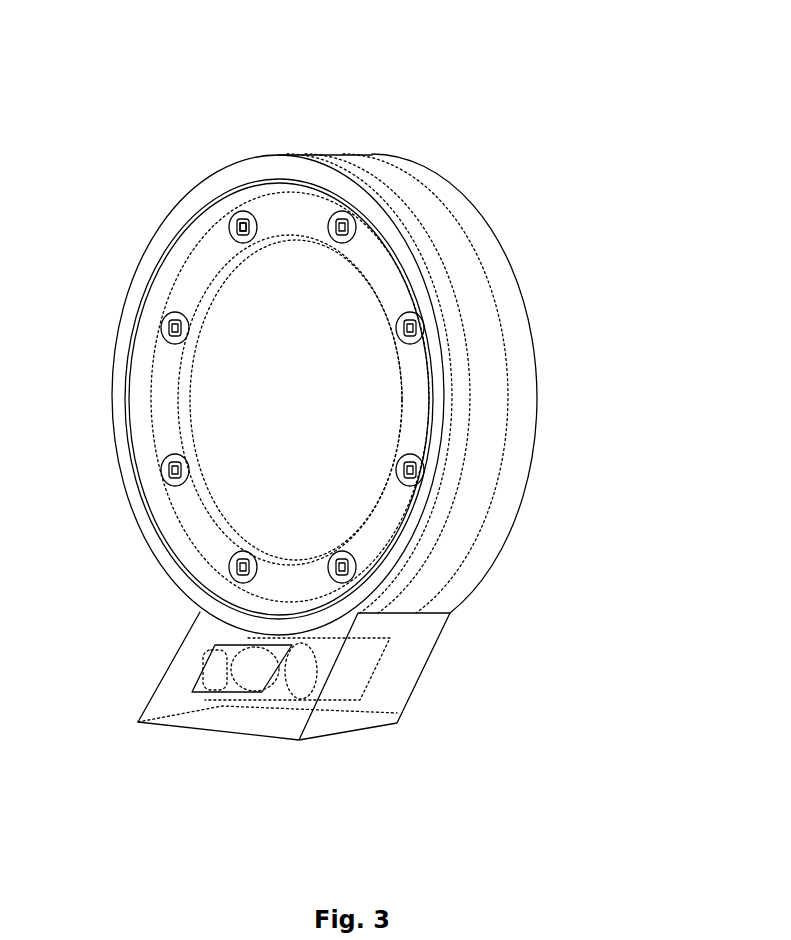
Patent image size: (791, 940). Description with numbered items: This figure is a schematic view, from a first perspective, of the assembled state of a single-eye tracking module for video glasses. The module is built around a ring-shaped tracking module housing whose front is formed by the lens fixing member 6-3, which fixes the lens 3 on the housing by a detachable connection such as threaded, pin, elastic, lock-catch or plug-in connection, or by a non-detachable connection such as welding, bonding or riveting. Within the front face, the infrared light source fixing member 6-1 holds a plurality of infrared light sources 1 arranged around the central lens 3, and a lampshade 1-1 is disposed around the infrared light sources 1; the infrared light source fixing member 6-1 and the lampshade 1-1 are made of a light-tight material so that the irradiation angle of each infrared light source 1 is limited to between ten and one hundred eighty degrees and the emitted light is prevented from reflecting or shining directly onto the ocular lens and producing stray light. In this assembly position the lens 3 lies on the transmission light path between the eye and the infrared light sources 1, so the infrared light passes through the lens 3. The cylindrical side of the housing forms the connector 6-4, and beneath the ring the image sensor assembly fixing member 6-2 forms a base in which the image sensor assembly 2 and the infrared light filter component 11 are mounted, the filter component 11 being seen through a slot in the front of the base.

The infrared light source 1 is at (243, 207).
The lampshade 1-1 is at (255, 212).
The image sensor assembly 2 is at (345, 682).
The lens 3 is at (220, 393).
The infrared light source fixing member 6-1 is at (280, 213).
The image sensor assembly fixing member 6-2 is at (387, 687).
The lens fixing member 6-3 is at (152, 247).
The connector 6-4 is at (512, 308).
The infrared light filter component 11 is at (237, 678).